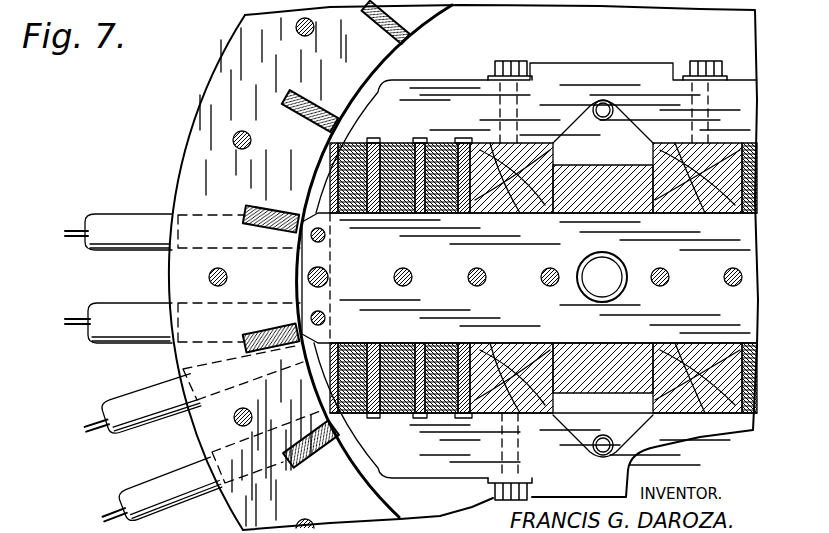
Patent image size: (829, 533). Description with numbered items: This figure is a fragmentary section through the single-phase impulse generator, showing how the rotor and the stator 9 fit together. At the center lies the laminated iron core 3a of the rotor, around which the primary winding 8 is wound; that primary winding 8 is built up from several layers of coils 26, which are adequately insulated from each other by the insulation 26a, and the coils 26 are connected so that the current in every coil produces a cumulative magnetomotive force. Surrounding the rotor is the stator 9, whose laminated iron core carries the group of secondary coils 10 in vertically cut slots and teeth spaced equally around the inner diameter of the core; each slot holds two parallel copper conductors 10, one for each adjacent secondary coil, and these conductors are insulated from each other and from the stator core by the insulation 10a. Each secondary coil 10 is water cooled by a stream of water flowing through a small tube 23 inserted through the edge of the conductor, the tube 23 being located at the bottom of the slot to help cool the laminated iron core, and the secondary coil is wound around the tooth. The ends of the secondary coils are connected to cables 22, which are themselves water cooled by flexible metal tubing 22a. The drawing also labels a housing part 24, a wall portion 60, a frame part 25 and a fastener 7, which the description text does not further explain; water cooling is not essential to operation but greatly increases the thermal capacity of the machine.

The housing casing 24 is at (216, 66).
The stator 9 is at (182, 140).
The inner cylindrical wall 60 is at (289, 150).
The frame plate 25 is at (333, 97).
The small tube 23 is at (292, 96).
The secondary coil 10 is at (312, 135).
The insulation 10a is at (263, 208).
The coil 26 is at (353, 143).
The insulation 26a is at (385, 143).
The primary winding 8 is at (447, 412).
The laminated iron core 3a is at (313, 255).
The cable 22 is at (105, 218).
The flexible metal tubing 22a is at (89, 376).
The clamping bolt 7 is at (518, 501).